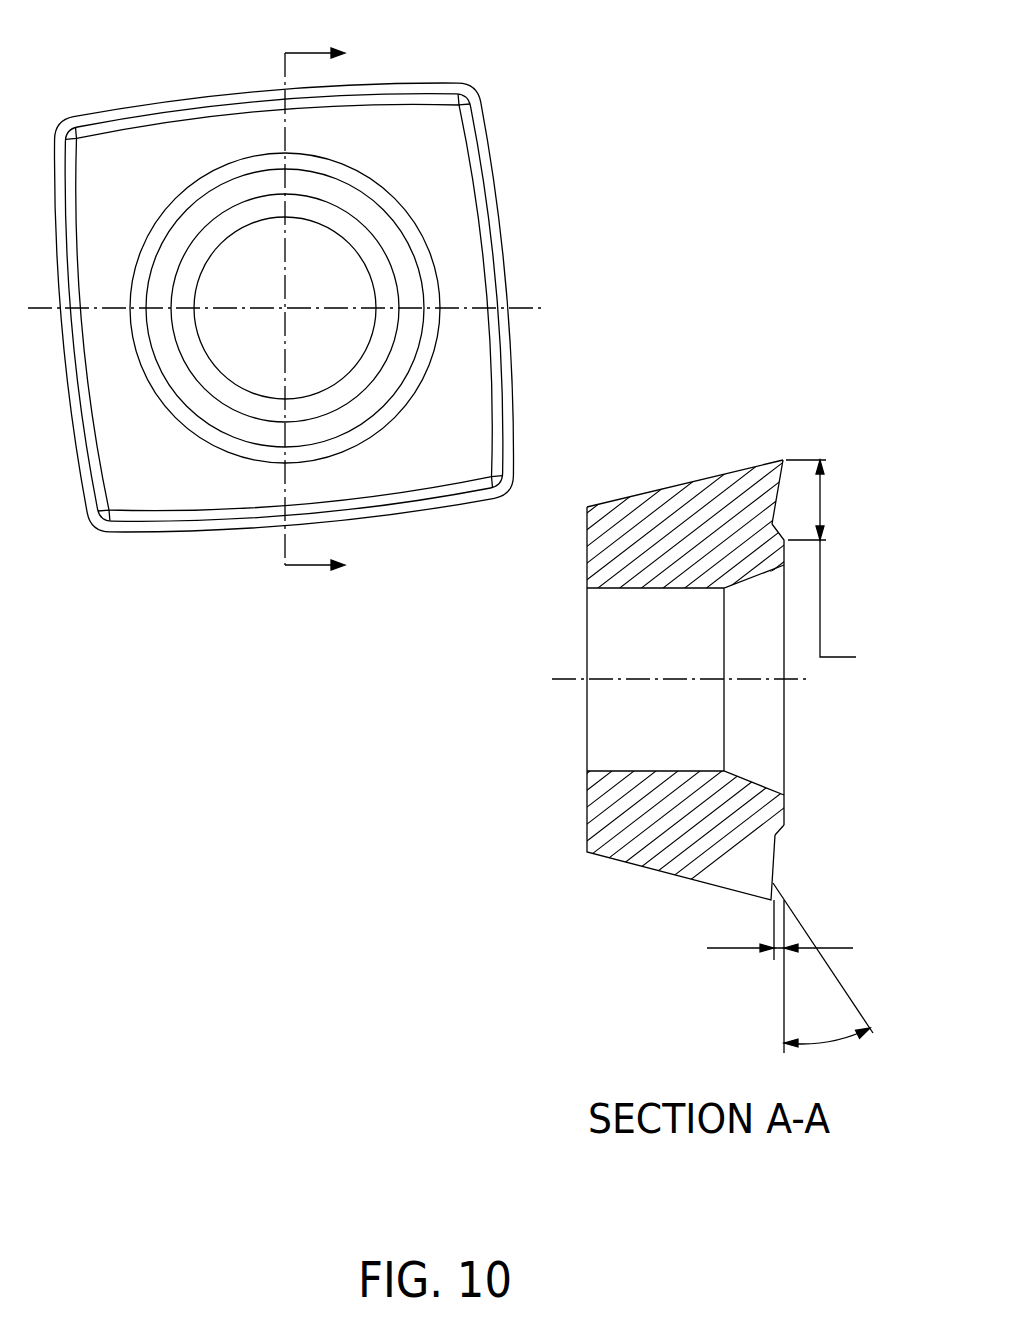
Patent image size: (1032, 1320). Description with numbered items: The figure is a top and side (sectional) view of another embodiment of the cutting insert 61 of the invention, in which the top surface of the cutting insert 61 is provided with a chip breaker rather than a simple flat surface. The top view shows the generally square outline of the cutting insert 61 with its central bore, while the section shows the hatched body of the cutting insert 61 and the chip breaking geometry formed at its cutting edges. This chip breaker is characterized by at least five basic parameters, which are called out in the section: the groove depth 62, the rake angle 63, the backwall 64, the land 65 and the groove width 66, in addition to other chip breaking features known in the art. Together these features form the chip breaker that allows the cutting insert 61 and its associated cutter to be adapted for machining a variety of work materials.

The cutting insert 61 is at (385, 87).
The groove depth 62 is at (764, 976).
The rake angle 63 is at (790, 1042).
The backwall 64 is at (782, 828).
The land 65 is at (786, 461).
The groove width 66 is at (855, 605).